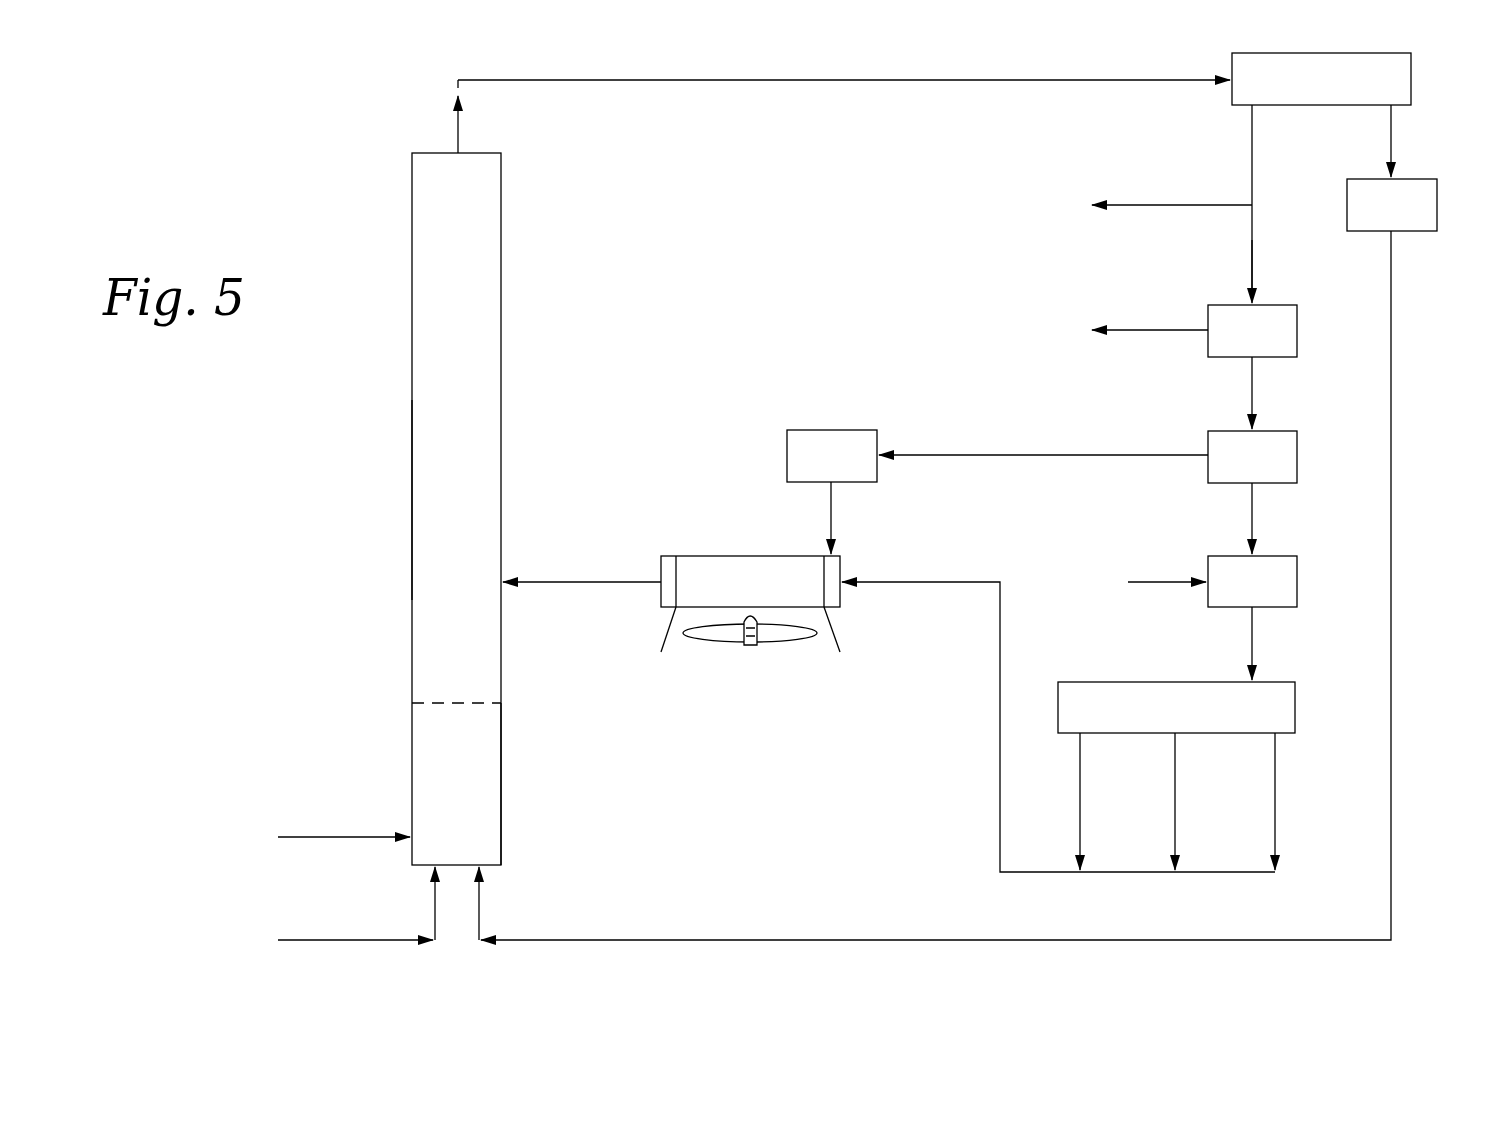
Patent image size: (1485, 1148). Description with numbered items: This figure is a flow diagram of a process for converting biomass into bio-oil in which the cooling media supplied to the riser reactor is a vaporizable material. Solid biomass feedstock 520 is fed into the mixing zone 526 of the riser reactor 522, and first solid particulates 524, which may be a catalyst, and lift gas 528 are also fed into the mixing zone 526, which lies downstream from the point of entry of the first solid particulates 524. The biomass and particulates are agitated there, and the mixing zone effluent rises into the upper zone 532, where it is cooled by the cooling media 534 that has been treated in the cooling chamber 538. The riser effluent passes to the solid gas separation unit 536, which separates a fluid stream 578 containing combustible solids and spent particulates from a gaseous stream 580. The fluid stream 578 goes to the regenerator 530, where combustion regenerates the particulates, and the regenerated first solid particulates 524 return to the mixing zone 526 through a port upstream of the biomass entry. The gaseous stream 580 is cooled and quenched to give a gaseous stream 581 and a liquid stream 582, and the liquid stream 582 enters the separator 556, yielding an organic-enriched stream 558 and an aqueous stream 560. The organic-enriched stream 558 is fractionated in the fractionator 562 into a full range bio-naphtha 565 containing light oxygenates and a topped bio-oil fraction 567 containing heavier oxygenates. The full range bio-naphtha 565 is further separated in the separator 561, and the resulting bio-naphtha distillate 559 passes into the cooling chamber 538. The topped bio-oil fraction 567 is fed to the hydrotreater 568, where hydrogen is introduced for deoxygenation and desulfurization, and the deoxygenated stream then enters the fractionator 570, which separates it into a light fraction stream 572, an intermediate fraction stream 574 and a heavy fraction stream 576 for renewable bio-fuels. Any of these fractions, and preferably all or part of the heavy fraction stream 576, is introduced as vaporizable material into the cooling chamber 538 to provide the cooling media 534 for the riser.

The solid biomass feedstock 520 is at (320, 835).
The riser reactor 522 is at (456, 509).
The first solid particulates 524 is at (1392, 488).
The mixing zone 526 is at (501, 782).
The lift gas 528 is at (320, 938).
The regenerator 530 is at (1392, 205).
The upper zone 532 is at (428, 505).
The cooling media 534 is at (602, 580).
The solid gas separation unit 536 is at (934, 103).
The cooling chamber 538 is at (750, 604).
The separator 556 is at (1252, 331).
The organic-enriched stream 558 is at (1252, 395).
The bio-naphtha distillate 559 is at (831, 520).
The aqueous stream 560 is at (1144, 328).
The separator 561 is at (832, 456).
The fractionator 562 is at (1252, 457).
The full range bio-naphtha 565 is at (1144, 453).
The topped bio-oil fraction 567 is at (1252, 520).
The hydrotreater 568 is at (1192, 581).
The fractionator 570 is at (1176, 670).
The light fraction stream 572 is at (1080, 770).
The intermediate fraction stream 574 is at (1175, 770).
The heavy fraction stream 576 is at (1275, 770).
The fluid stream 578 is at (1391, 145).
The gaseous stream 580 is at (1252, 147).
The gaseous stream 581 is at (1141, 203).
The liquid stream 582 is at (1252, 260).